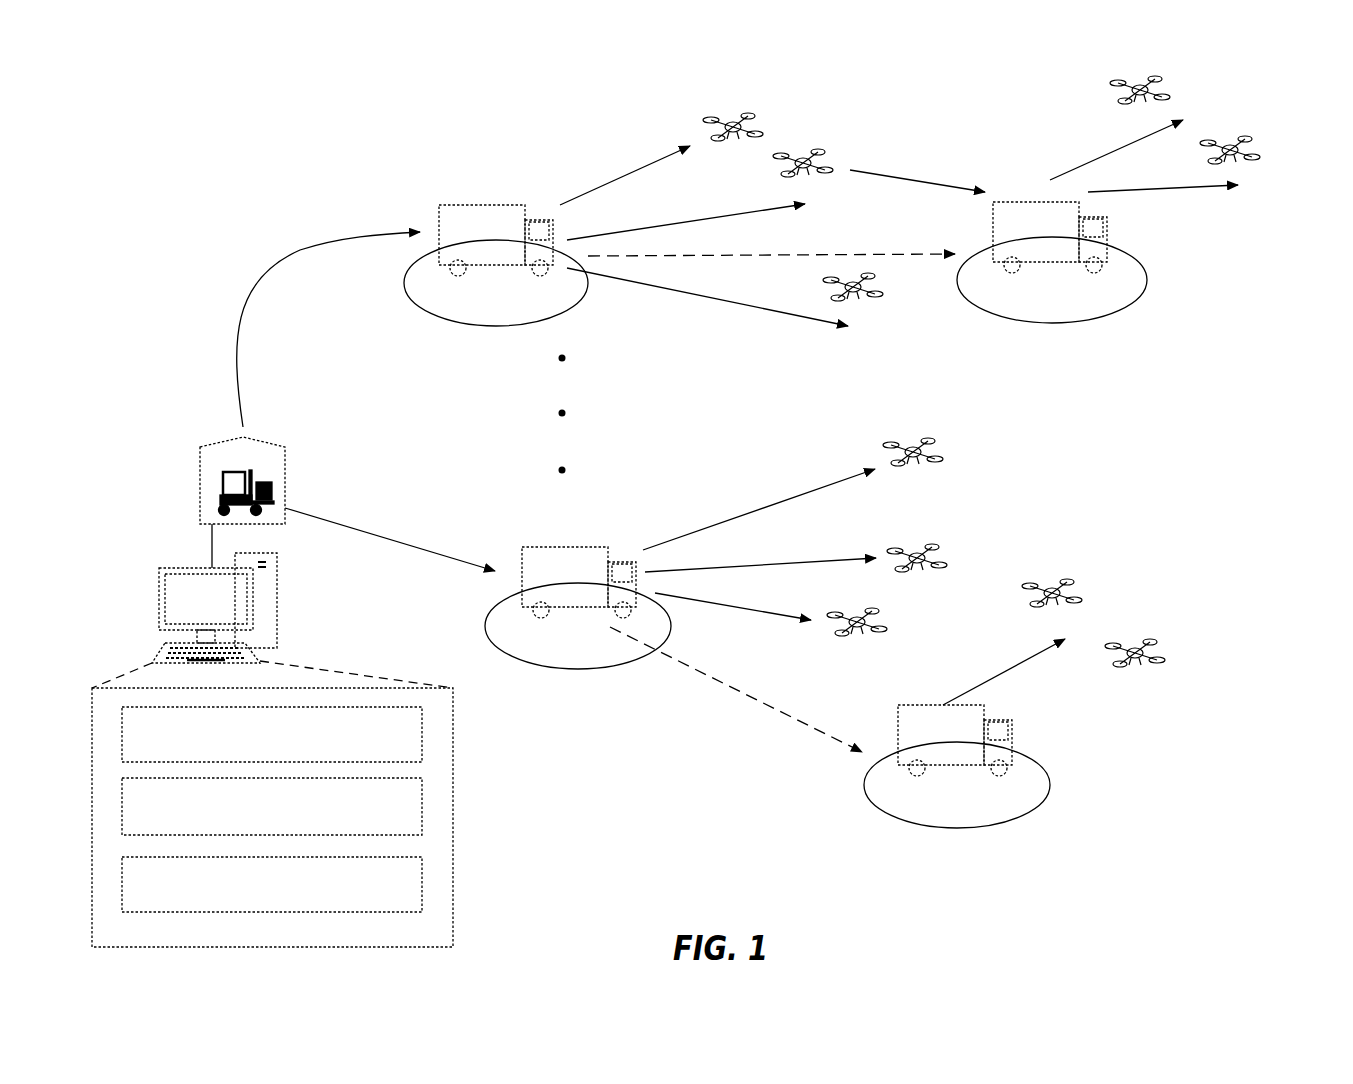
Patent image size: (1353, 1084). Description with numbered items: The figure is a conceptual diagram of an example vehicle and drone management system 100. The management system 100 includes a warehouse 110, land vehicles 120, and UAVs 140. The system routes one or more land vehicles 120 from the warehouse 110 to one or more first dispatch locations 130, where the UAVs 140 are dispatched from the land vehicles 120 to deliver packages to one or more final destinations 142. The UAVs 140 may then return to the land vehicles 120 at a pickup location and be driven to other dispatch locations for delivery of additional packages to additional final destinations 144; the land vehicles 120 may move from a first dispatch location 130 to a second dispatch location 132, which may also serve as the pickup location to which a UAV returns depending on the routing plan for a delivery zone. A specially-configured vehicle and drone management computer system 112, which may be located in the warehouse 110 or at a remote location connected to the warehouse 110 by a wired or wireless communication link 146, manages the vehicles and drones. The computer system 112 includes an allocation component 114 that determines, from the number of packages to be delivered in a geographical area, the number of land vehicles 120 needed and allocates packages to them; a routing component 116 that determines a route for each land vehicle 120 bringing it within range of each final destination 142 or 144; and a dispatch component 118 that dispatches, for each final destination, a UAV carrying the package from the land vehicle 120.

The vehicle and drone management system 100 is at (228, 120).
The warehouse 110 is at (217, 447).
The vehicle and drone management computer system 112 is at (272, 603).
The allocation component 114 is at (422, 733).
The routing component 116 is at (422, 808).
The dispatch component 118 is at (422, 883).
The land vehicle 120 is at (485, 202).
The first dispatch location 130 is at (487, 305).
The second dispatch location 132 is at (1048, 297).
The UAV 140 is at (718, 110).
The final destination 142 is at (782, 97).
The additional final destination 144 is at (1212, 100).
The communication link 146 is at (210, 550).